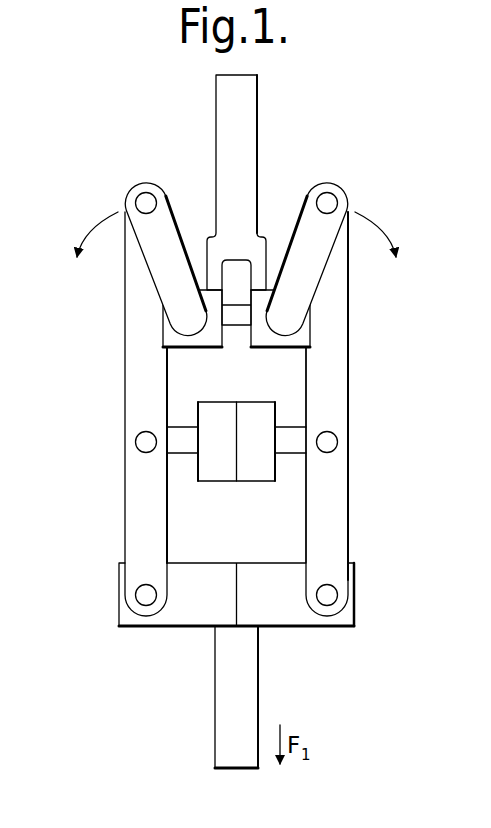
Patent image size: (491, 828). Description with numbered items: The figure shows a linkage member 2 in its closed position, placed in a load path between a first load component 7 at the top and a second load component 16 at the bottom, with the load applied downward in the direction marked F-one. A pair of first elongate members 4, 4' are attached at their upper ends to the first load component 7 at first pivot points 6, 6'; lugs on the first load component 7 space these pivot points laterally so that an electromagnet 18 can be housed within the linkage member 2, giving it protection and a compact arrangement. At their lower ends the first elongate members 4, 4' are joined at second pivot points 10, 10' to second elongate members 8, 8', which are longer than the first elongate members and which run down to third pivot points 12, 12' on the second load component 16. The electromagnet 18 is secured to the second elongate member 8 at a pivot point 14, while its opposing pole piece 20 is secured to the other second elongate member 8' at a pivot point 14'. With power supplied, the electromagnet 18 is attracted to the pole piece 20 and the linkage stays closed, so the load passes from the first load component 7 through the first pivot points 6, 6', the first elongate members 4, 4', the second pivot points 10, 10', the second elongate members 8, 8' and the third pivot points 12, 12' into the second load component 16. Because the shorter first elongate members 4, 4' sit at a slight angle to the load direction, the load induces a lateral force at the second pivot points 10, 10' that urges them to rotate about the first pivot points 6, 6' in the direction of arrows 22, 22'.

The linkage member 2 is at (390, 367).
The first elongate member 4 is at (145, 259).
The first elongate member 4' is at (331, 259).
The first pivot point 6 is at (152, 318).
The first pivot point 6' is at (324, 318).
The first load component 7 is at (228, 130).
The second elongate member 8 is at (116, 414).
The second elongate member 8' is at (354, 414).
The second pivot point 10 is at (119, 185).
The second pivot point 10' is at (349, 168).
The third pivot point 12 is at (112, 597).
The third pivot point 12' is at (365, 599).
The pivot point 14 is at (108, 447).
The pivot point 14' is at (372, 444).
The second load component 16 is at (233, 720).
The electromagnet 18 is at (212, 473).
The pole piece 20 is at (258, 472).
The arrow 22 is at (75, 224).
The arrow 22' is at (403, 222).